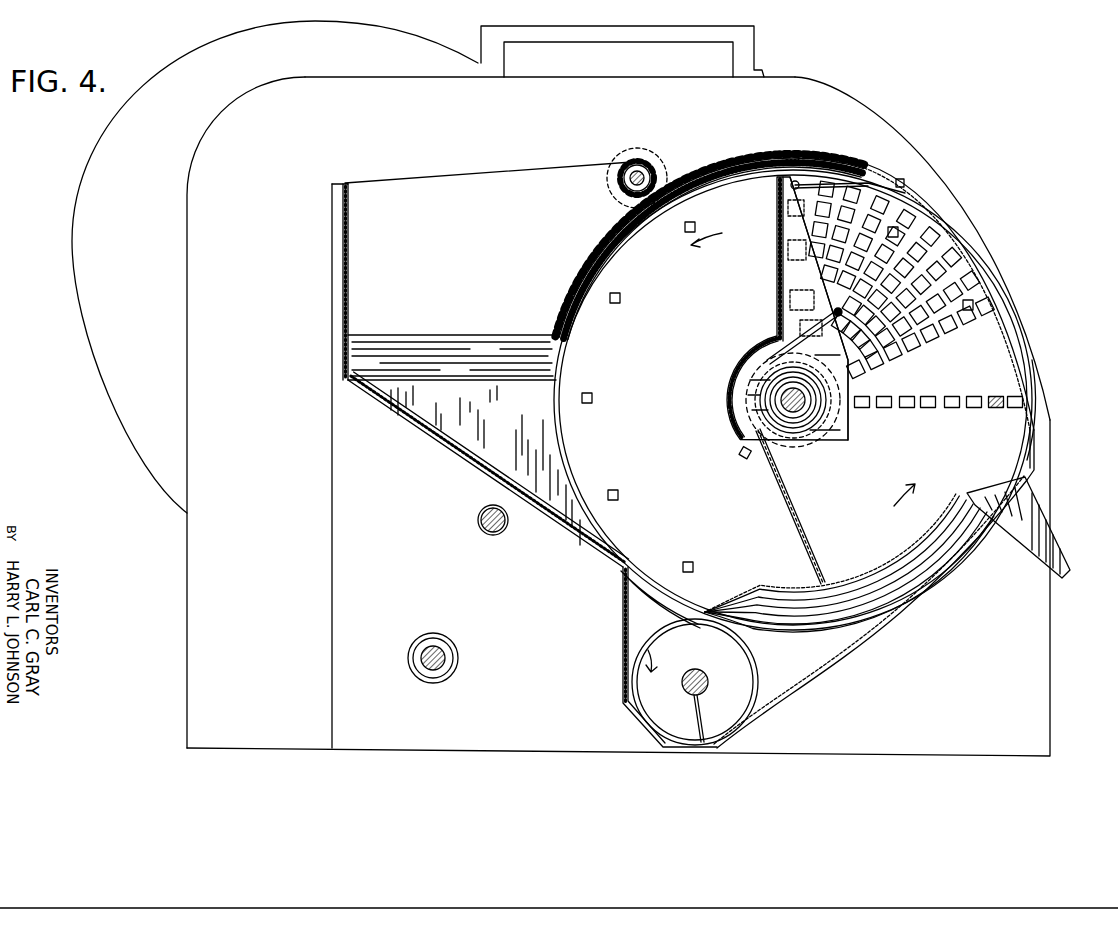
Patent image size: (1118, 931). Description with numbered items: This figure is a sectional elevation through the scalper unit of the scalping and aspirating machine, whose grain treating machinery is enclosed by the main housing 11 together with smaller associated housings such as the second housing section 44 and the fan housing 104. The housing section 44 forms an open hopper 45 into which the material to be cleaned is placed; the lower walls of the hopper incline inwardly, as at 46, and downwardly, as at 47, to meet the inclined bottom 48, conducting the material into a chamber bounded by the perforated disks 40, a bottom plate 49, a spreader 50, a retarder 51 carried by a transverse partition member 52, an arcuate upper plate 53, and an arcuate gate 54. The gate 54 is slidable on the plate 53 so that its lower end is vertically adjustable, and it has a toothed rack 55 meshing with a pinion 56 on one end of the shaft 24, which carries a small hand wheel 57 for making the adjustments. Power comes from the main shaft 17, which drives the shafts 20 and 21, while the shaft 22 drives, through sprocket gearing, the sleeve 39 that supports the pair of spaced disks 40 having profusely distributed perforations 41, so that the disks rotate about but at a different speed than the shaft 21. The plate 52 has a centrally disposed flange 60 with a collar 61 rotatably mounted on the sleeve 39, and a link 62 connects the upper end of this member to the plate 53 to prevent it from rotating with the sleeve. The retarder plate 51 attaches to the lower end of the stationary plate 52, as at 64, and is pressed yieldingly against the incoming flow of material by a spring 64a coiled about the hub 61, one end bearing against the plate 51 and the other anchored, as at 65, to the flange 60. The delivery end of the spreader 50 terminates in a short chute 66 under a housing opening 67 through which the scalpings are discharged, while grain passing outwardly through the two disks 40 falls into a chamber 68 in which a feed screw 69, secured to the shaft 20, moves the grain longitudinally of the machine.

The main housing 11 is at (815, 93).
The fan housing 104 is at (148, 450).
The open hopper 45 is at (447, 198).
The inwardly inclined lower hopper wall 46 is at (380, 363).
The downwardly inclined lower hopper wall 47 is at (433, 405).
The inclined bottom 48 is at (485, 478).
The shaft 22 is at (500, 533).
The main shaft 17 is at (433, 663).
The bottom plate 49 is at (623, 607).
The feed screw 69 is at (633, 718).
The shaft 20 is at (710, 680).
The chamber 68 is at (773, 693).
The housing section 44 is at (591, 171).
The link 62 is at (871, 175).
The spreader 50 is at (867, 577).
The short chute 66 is at (1033, 530).
The perforated disks 40 is at (990, 310).
The arcuate gate 54 is at (602, 245).
The housing opening 67 is at (1030, 433).
The toothed rack 55 is at (829, 152).
The arcuate upper plate 53 is at (744, 168).
The pinion 56 is at (639, 160).
The shaft 24 is at (646, 176).
The hand wheel 57 is at (665, 165).
The perforations 41 is at (973, 270).
The transverse partition member 52 is at (748, 352).
The flange 60 is at (840, 380).
The sleeve 39 is at (806, 397).
The shaft 21 is at (803, 418).
The collar 61 is at (827, 413).
The spring anchor 65 is at (843, 312).
The retarder attachment 64 is at (748, 455).
The retarder 51 is at (797, 515).
The spring 64a is at (802, 512).